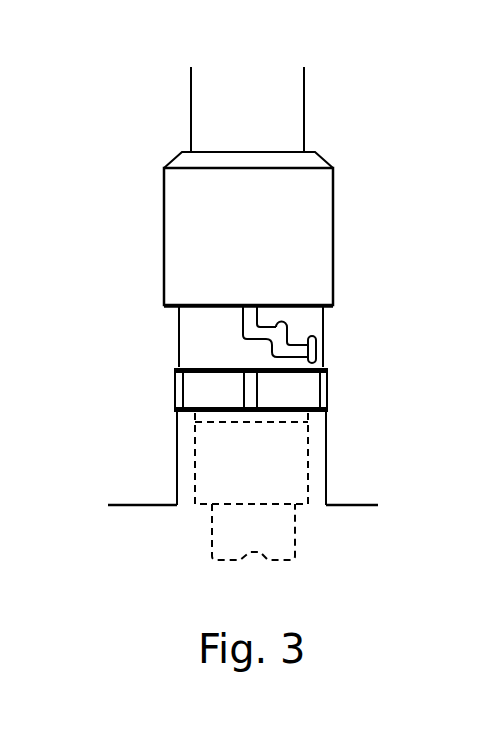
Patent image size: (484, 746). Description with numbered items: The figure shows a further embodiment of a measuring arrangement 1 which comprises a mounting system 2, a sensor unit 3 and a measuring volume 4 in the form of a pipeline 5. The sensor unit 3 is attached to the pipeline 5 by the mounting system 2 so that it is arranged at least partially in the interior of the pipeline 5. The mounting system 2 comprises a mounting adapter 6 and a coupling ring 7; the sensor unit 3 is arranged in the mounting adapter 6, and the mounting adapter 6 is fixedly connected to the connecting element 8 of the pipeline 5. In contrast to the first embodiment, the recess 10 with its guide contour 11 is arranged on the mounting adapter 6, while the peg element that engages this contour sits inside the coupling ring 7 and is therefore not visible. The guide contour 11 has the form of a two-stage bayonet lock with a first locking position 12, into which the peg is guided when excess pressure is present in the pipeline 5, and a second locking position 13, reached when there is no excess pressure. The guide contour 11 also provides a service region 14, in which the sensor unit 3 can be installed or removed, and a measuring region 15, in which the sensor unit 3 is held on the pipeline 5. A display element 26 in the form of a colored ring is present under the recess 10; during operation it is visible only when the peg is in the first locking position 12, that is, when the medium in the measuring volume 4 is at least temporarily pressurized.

The measuring arrangement 1 is at (112, 61).
The mounting system 2 is at (132, 161).
The sensor unit 3 is at (253, 112).
The coupling ring 7 is at (288, 177).
The recess 10 is at (288, 322).
The service region 14 is at (210, 270).
The guide contour 11 is at (257, 333).
The first locking position 12 is at (321, 337).
The second locking position 13 is at (318, 362).
The measuring region 15 is at (327, 343).
The display element 26 is at (192, 365).
The mounting adapter 6 is at (312, 393).
The connecting element 8 is at (177, 458).
The measuring volume 4 is at (150, 517).
The pipeline 5 is at (150, 517).